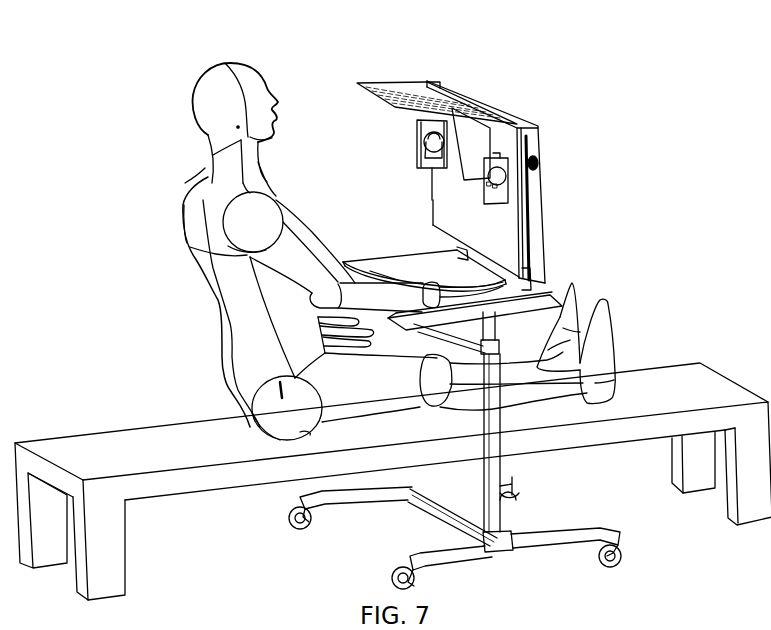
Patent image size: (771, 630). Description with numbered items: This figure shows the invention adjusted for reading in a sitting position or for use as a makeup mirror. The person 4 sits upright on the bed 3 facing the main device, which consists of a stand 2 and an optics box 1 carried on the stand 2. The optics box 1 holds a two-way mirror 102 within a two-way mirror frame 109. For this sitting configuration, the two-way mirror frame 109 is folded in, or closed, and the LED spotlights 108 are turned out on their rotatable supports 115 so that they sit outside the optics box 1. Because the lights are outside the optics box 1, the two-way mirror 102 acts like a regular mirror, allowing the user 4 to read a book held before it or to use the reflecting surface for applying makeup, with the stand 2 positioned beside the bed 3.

The optics box 1 is at (536, 181).
The stand 2 is at (508, 545).
The bed 3 is at (67, 455).
The person 4 is at (207, 102).
The two-way mirror 102 is at (470, 130).
The LED spotlights 108 is at (432, 160).
The two-way mirror frame 109 is at (398, 90).
The rotatable supports 115 is at (417, 122).